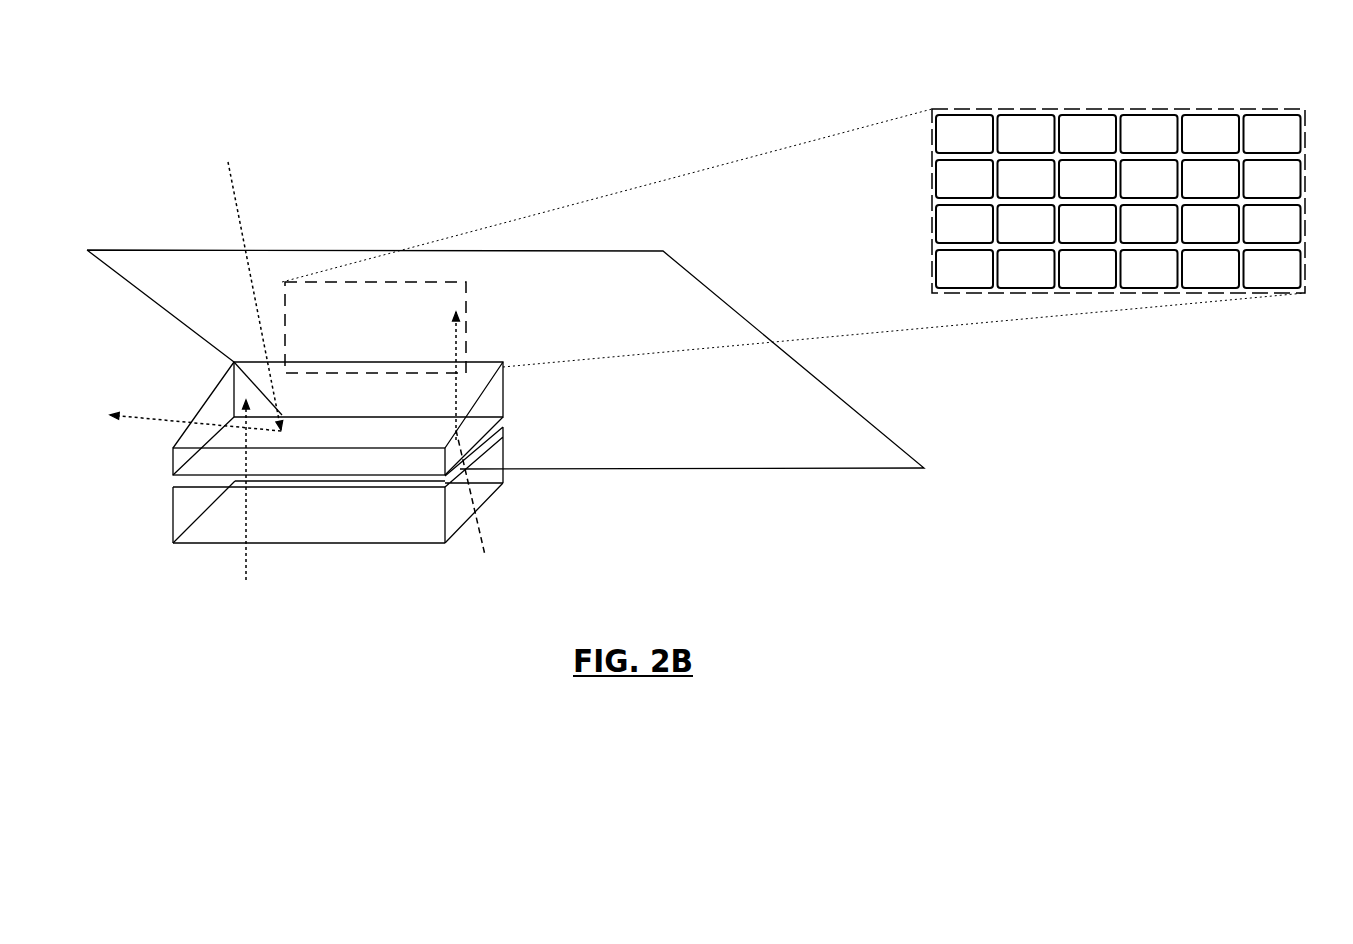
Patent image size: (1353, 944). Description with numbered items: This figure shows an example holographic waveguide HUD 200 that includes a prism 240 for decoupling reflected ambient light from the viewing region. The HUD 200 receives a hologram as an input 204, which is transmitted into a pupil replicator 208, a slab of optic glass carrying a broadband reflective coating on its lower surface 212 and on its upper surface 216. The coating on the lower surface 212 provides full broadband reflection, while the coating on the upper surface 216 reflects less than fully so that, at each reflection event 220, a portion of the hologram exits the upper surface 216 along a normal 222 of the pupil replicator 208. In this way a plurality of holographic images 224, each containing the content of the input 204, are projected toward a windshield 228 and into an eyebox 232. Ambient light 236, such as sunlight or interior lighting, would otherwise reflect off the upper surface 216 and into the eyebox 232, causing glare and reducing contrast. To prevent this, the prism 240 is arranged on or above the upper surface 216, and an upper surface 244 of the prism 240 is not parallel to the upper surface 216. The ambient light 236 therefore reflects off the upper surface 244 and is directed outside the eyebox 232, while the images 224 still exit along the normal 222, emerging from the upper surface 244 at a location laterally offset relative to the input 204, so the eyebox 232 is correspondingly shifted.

The holographic waveguide HUD 200 is at (198, 580).
The input 204 is at (483, 537).
The pupil replicator 208 is at (173, 515).
The lower surface 212 is at (380, 543).
The upper surface 216 is at (183, 482).
The reflection event 220 is at (455, 443).
The normal 222 is at (247, 560).
The holographic images 224 is at (455, 345).
The windshield 228 is at (133, 291).
The eyebox 232 is at (466, 287).
The ambient light 236 is at (233, 190).
The prism 240 is at (505, 392).
The upper surface of the prism 244 is at (218, 402).